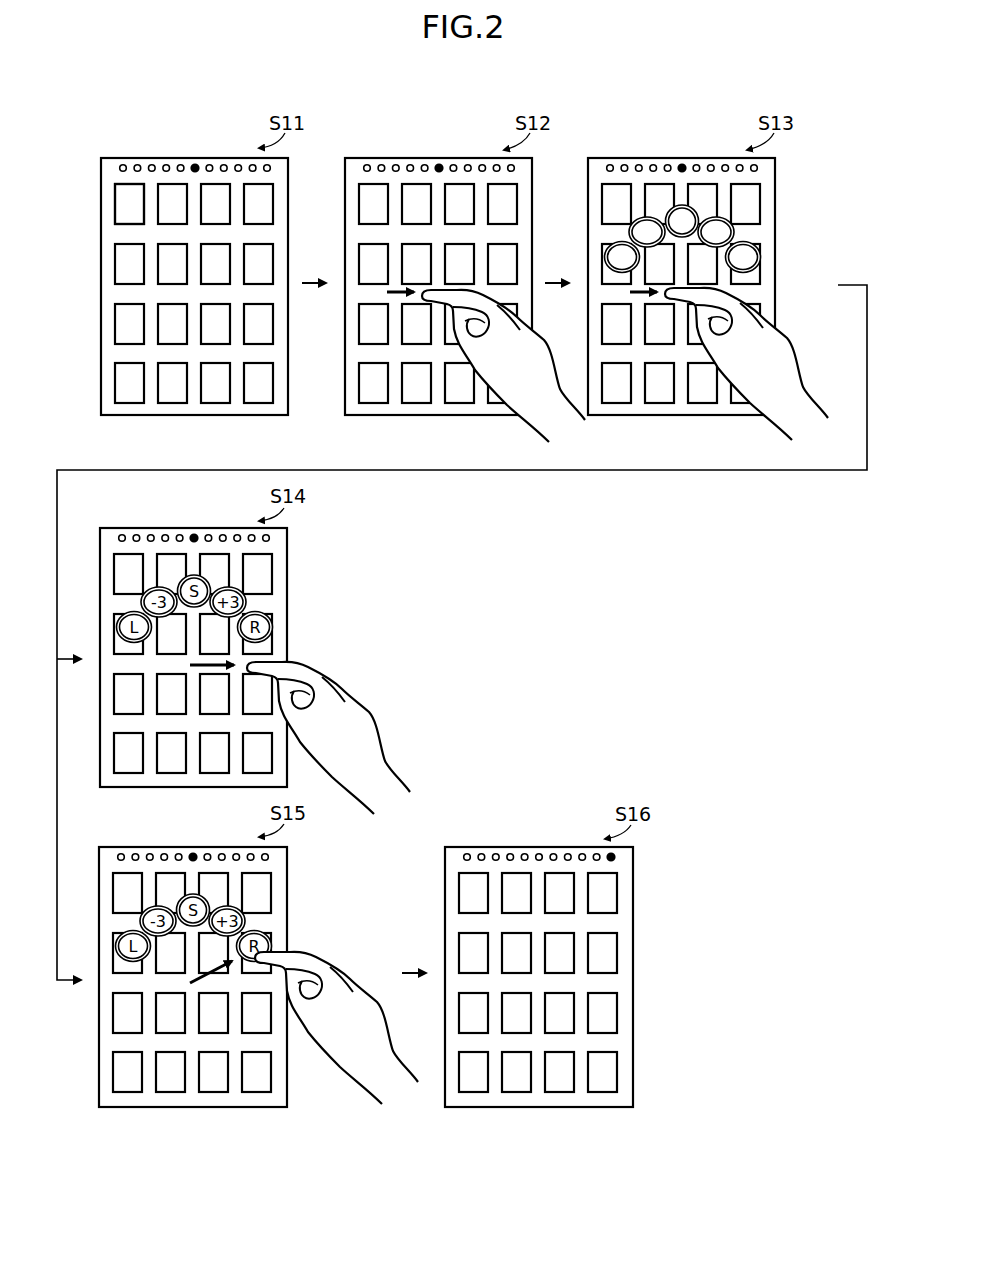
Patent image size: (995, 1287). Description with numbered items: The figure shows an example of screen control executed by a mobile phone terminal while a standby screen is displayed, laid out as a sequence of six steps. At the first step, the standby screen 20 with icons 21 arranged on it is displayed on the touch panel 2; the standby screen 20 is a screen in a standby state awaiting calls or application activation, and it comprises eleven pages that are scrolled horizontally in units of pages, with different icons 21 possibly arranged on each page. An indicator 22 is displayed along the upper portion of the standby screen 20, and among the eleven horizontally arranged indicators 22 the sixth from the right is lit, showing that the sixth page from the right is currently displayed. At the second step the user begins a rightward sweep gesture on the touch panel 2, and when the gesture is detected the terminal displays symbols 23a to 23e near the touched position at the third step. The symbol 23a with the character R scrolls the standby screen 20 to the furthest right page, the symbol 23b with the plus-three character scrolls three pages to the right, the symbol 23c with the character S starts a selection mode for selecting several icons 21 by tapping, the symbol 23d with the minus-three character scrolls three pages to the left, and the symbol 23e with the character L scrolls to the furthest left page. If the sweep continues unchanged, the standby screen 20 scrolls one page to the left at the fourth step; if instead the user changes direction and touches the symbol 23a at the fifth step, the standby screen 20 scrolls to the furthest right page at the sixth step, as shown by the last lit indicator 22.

The touch panel 2 is at (155, 158).
The standby screen 20 is at (107, 390).
The icons 21 is at (115, 205).
The indicator 22 is at (118, 169).
The symbol 23a is at (754, 246).
The symbol 23b is at (729, 221).
The symbol 23c is at (682, 205).
The symbol 23d is at (632, 222).
The symbol 23e is at (608, 246).